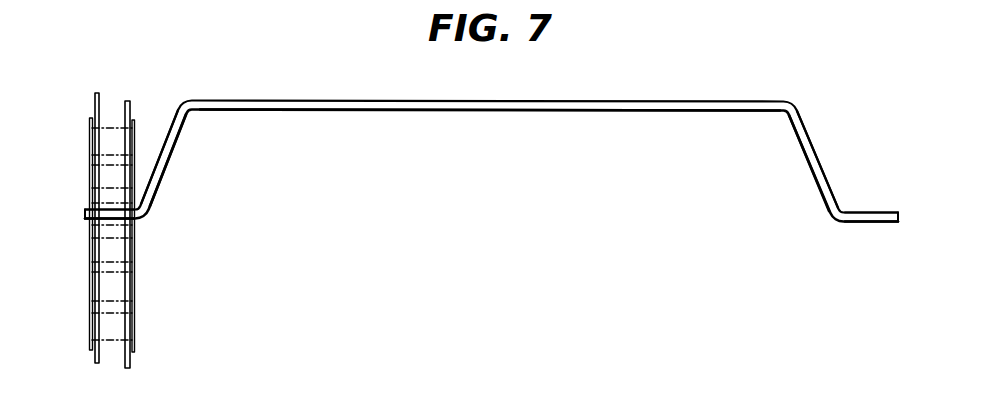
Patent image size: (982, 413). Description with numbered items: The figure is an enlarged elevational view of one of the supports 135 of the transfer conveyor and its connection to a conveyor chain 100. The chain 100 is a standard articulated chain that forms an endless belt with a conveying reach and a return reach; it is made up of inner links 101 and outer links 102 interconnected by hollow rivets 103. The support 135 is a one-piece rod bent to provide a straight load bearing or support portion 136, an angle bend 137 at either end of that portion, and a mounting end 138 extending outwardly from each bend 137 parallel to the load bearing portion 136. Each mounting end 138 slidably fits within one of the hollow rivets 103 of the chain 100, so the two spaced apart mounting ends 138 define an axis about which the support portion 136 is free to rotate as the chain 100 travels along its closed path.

The chain 100 is at (136, 98).
The inner link 101 is at (99, 100).
The outer link 102 is at (136, 278).
The hollow rivet 103 is at (113, 326).
The support 135 is at (594, 99).
The load bearing portion 136 is at (502, 110).
The angle bend 137 is at (175, 158).
The mounting end 138 is at (85, 217).